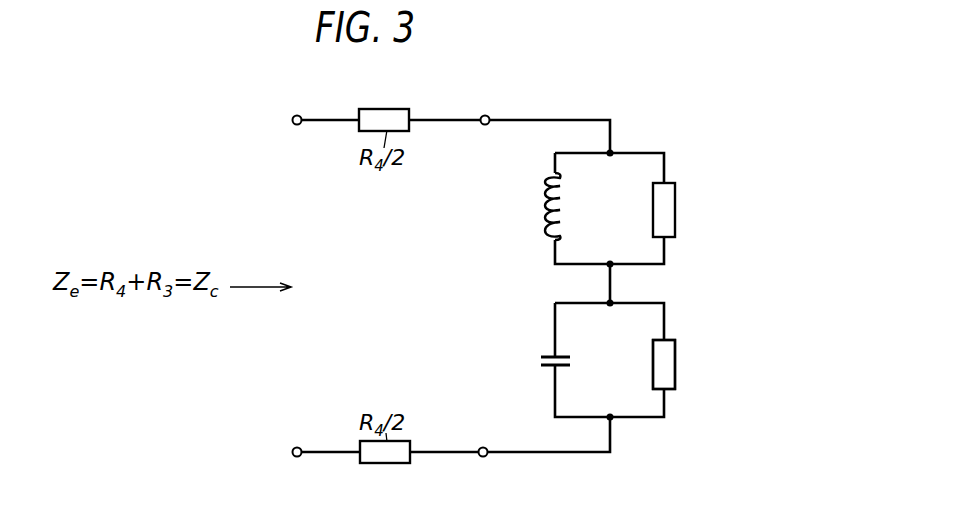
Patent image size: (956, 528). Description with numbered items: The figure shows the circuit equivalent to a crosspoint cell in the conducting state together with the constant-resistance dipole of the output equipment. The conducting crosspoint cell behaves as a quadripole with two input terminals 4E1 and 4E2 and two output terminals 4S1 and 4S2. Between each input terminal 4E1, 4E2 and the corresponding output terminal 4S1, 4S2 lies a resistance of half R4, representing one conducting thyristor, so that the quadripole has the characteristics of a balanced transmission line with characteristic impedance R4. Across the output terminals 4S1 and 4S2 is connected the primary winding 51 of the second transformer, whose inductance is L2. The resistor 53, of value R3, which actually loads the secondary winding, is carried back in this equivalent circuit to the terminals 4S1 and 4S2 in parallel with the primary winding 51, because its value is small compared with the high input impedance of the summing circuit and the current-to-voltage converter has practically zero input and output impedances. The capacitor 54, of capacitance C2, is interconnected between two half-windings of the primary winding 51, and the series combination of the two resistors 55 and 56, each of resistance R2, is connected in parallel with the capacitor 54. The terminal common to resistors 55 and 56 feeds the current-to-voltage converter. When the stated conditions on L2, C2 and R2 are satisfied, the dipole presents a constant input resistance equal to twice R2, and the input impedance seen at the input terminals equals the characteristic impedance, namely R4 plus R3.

The input terminal 4E1 is at (258, 116).
The input terminal 4E2 is at (269, 451).
The output terminal 4S1 is at (489, 98).
The output terminal 4S2 is at (484, 474).
The primary winding 51 is at (479, 206).
The resistor 53 is at (690, 172).
The capacitor 54 is at (512, 367).
The resistor 55 is at (696, 380).
The resistor 56 is at (694, 401).